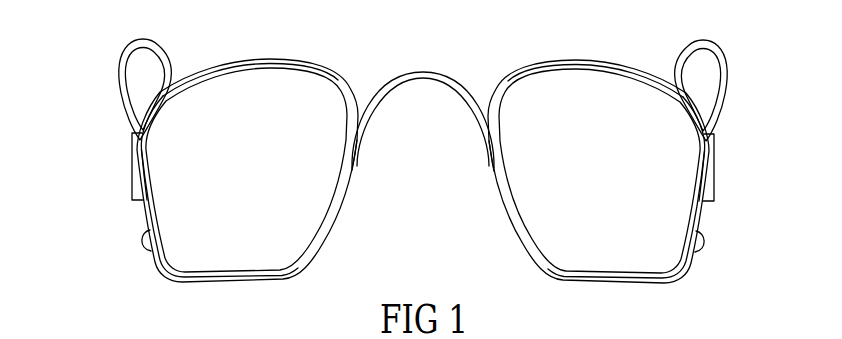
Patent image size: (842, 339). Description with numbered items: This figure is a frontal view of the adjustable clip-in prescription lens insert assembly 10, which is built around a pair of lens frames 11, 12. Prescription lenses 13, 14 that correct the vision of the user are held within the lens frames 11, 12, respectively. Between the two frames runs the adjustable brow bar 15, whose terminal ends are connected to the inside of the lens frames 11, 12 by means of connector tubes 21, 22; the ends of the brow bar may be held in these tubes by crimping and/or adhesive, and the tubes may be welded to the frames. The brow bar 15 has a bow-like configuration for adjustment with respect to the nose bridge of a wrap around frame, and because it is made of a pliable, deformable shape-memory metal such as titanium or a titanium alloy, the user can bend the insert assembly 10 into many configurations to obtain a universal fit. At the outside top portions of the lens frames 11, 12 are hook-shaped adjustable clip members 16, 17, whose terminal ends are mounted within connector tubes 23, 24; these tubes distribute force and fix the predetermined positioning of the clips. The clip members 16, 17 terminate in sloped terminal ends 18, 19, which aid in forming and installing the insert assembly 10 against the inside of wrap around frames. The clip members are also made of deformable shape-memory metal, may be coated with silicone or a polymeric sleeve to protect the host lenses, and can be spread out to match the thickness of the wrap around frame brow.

The adjustable clip-in prescription lens insert assembly 10 is at (502, 59).
The lens frame 11 is at (230, 62).
The lens frame 12 is at (626, 72).
The prescription lens 13 is at (185, 228).
The prescription lens 14 is at (647, 230).
The adjustable brow bar 15 is at (422, 72).
The hook-shaped adjustable clip member 16 is at (94, 81).
The hook-shaped adjustable clip member 17 is at (753, 78).
The sloped terminal end 18 is at (116, 195).
The sloped terminal end 19 is at (732, 175).
The connector tube 21 is at (353, 160).
The connector tube 22 is at (493, 163).
The connector tube 23 is at (137, 120).
The connector tube 24 is at (707, 118).